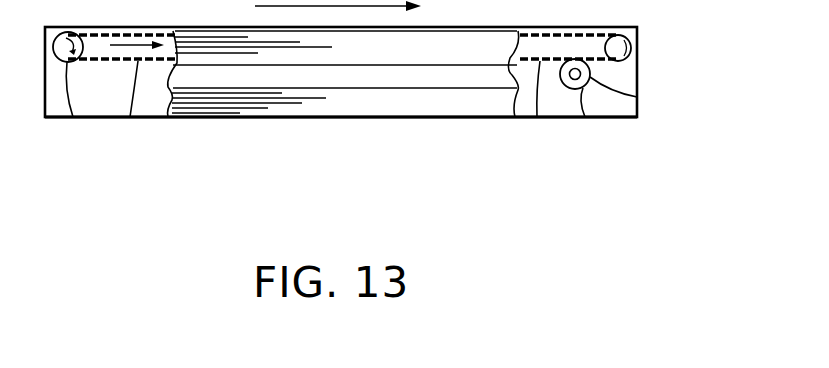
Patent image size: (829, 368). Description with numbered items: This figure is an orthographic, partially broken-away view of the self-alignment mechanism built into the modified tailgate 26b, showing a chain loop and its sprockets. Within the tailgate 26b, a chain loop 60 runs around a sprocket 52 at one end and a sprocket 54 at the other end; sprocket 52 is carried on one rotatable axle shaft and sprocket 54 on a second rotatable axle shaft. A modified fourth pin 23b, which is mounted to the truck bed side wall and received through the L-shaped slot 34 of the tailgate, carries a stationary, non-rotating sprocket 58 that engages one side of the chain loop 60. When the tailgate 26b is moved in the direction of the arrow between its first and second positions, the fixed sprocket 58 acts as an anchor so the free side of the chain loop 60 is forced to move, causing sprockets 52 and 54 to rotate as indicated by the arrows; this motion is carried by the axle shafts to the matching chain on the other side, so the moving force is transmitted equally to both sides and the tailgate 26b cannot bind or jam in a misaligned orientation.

The sprocket 52 is at (631, 50).
The sprocket 54 is at (73, 117).
The sprocket 58 is at (590, 76).
The chain loop 60 is at (130, 117).
The second L-shaped slot 34 is at (405, 78).
The modified tailgate 26b is at (301, 122).
The modified fourth pin 23b is at (580, 117).